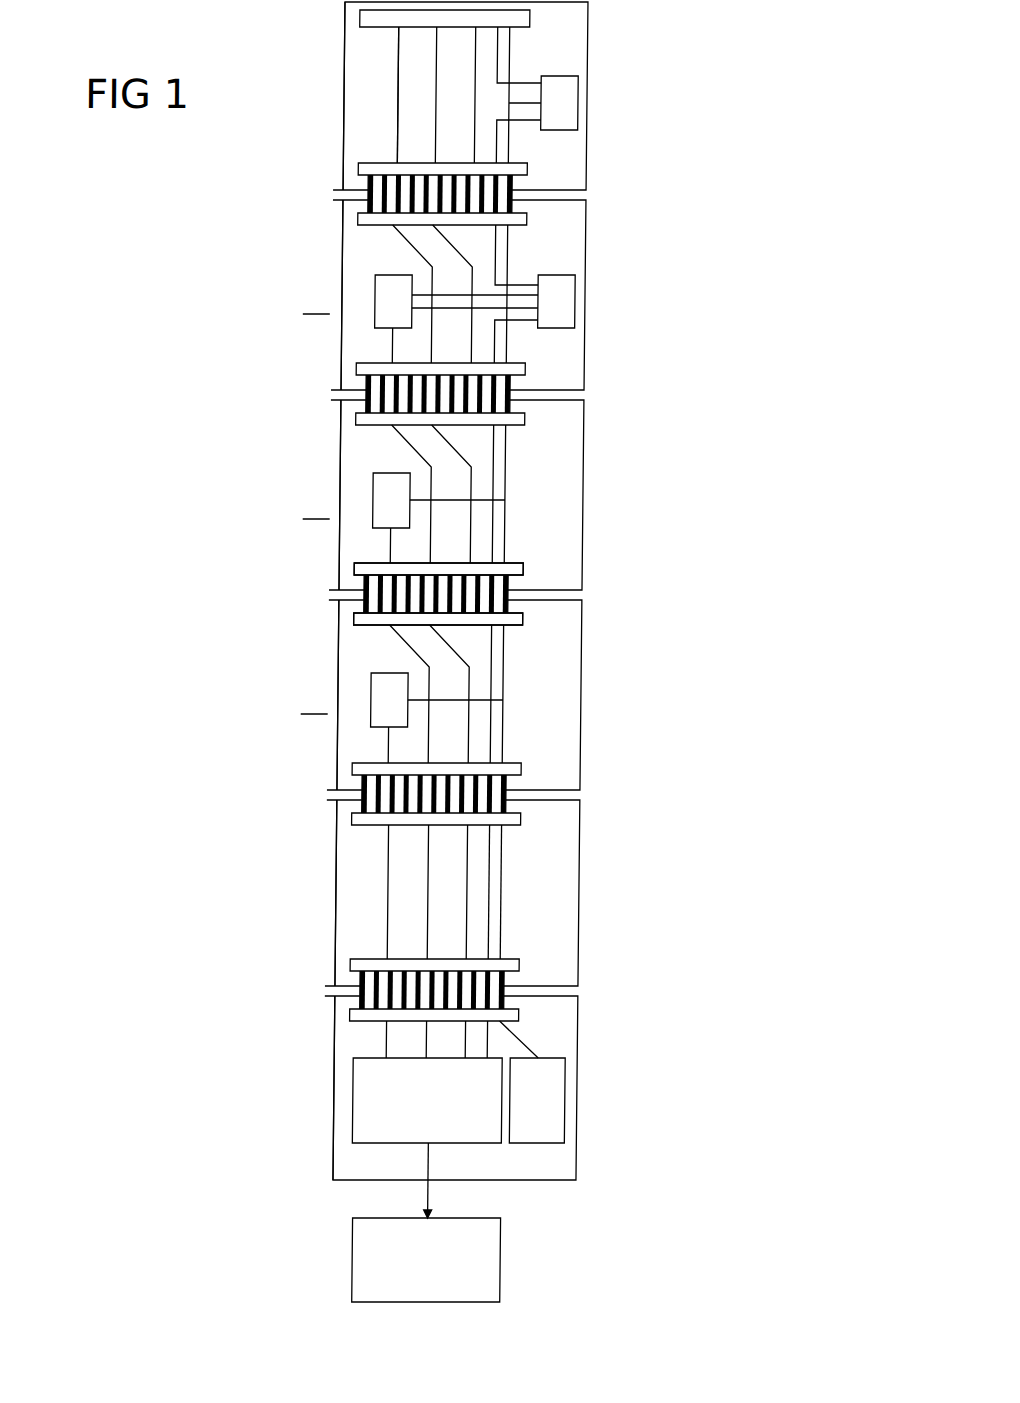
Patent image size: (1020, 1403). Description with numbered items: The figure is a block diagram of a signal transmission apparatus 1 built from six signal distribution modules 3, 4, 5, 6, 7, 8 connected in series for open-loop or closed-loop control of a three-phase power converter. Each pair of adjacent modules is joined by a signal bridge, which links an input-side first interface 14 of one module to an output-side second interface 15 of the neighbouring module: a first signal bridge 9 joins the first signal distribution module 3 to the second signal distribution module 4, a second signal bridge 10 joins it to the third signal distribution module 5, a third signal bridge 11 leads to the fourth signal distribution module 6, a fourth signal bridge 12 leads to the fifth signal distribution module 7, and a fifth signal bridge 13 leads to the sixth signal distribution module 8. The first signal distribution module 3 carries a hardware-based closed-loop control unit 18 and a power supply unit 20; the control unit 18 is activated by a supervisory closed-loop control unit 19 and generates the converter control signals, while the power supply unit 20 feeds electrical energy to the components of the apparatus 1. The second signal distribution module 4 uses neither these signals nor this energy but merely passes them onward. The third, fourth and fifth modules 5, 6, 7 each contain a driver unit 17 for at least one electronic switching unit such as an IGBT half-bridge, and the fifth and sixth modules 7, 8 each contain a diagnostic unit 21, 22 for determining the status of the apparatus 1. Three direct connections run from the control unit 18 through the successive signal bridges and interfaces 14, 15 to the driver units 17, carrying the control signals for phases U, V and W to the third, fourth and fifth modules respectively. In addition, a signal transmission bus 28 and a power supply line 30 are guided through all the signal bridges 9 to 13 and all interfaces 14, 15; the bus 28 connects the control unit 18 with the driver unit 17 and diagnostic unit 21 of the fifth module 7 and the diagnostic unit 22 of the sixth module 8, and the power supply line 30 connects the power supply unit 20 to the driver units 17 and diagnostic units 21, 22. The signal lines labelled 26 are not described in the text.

The signal transmission apparatus 1 is at (214, 266).
The first signal distribution module 3 is at (588, 1154).
The second signal distribution module 4 is at (588, 957).
The third signal distribution module 5 is at (588, 758).
The fourth signal distribution module 6 is at (588, 560).
The fifth signal distribution module 7 is at (588, 363).
The sixth signal distribution module 8 is at (588, 162).
The first signal bridge 9 is at (360, 991).
The second signal bridge 10 is at (360, 791).
The third signal bridge 11 is at (360, 591).
The fourth signal bridge 12 is at (360, 390).
The fifth signal bridge 13 is at (360, 192).
The first interface 14 is at (522, 567).
The second interface 15 is at (524, 621).
The driver unit 17 is at (378, 282).
The hardware-based closed-loop control unit 18 is at (364, 1105).
The supervisory closed-loop control unit 19 is at (513, 1267).
The power supply unit 20 is at (576, 1095).
The diagnostic unit 21 is at (581, 301).
The diagnostic unit 22 is at (588, 99).
The signal line 26 is at (398, 121).
The signal transmission bus 28 is at (506, 865).
The power supply line 30 is at (510, 912).